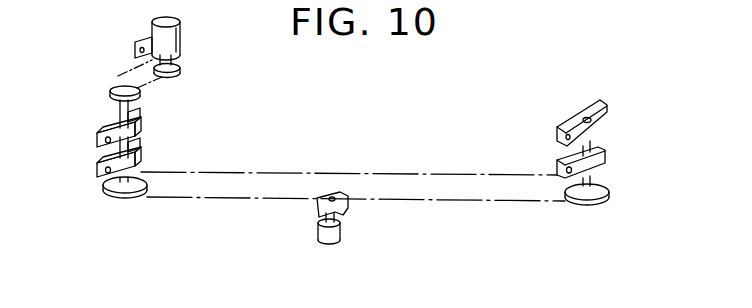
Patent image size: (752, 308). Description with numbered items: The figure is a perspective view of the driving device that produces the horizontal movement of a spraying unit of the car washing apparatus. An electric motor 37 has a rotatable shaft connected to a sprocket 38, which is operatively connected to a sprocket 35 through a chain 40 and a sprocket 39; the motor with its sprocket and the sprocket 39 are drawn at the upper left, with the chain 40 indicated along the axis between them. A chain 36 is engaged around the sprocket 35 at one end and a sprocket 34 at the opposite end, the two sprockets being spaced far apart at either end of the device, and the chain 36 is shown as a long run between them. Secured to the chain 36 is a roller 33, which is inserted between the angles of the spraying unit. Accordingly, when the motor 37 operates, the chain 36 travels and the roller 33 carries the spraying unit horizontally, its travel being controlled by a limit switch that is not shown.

The roller 33 is at (337, 243).
The sprocket 34 is at (608, 200).
The sprocket 35 is at (108, 198).
The chain 36 is at (238, 198).
The electric motor 37 is at (181, 47).
The sprocket 38 is at (181, 72).
The sprocket 39 is at (110, 93).
The chain 40 is at (158, 82).